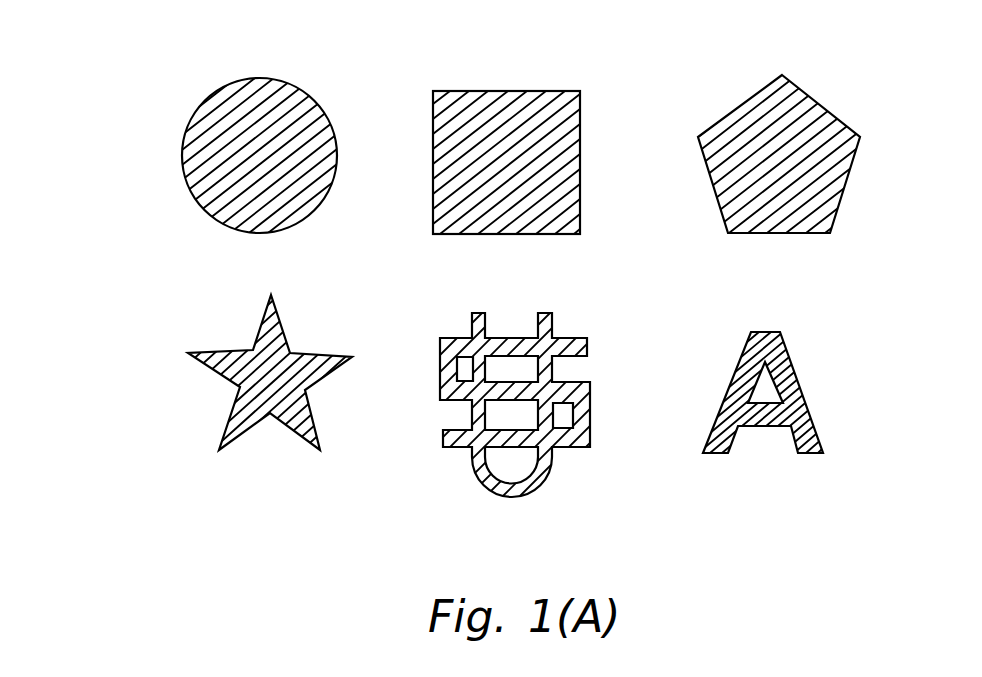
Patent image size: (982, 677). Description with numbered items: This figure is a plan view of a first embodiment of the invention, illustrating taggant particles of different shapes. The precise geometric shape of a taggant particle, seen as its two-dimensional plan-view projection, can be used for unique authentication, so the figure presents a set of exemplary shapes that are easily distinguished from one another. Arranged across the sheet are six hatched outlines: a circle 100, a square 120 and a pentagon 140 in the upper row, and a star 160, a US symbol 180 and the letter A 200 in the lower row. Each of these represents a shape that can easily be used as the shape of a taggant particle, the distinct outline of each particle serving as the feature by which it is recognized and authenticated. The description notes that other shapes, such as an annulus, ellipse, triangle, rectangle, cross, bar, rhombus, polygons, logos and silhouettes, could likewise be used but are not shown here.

The circle 100 is at (200, 98).
The square 120 is at (474, 90).
The pentagon 140 is at (755, 97).
The star 160 is at (207, 350).
The US symbol 180 is at (472, 323).
The letter A 200 is at (742, 350).